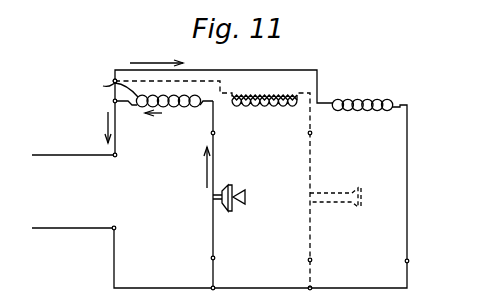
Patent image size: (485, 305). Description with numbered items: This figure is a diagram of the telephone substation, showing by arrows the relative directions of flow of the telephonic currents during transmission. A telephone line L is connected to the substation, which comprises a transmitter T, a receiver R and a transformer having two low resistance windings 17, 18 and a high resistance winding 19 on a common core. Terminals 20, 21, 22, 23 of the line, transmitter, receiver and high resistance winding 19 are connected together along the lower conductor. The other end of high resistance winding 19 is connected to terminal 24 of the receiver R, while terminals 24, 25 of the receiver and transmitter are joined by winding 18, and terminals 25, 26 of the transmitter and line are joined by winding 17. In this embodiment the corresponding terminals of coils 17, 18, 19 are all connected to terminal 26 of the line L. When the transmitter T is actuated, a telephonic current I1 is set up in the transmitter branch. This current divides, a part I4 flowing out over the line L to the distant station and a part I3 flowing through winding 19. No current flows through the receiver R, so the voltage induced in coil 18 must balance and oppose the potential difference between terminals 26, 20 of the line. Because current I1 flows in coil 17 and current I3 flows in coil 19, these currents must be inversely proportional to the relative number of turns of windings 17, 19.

The low resistance winding 17 is at (101, 85).
The low resistance winding 18 is at (264, 119).
The high resistance winding 19 is at (362, 118).
The line terminal 20 is at (116, 229).
The transmitter terminal 21 is at (215, 259).
The receiver terminal 22 is at (312, 261).
The high resistance winding terminal 23 is at (409, 262).
The receiver terminal 24 is at (312, 133).
The transmitter terminal 25 is at (215, 133).
The line terminal 26 is at (117, 157).
The telephone line L is at (73, 191).
The transmitter T is at (245, 200).
The receiver R is at (361, 202).
The transmitter current I1 is at (177, 149).
The auxiliary resistance current I3 is at (156, 55).
The line current I4 is at (98, 127).